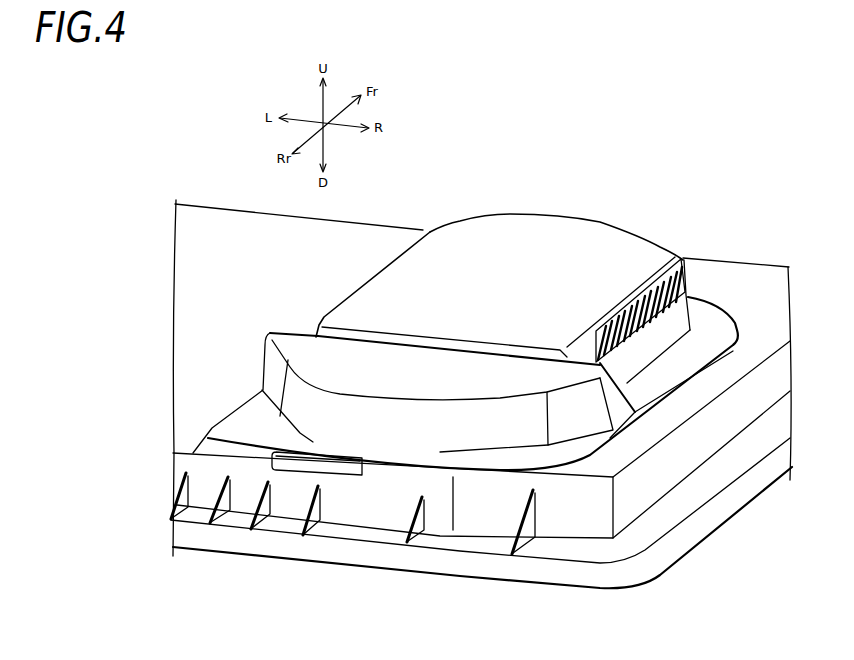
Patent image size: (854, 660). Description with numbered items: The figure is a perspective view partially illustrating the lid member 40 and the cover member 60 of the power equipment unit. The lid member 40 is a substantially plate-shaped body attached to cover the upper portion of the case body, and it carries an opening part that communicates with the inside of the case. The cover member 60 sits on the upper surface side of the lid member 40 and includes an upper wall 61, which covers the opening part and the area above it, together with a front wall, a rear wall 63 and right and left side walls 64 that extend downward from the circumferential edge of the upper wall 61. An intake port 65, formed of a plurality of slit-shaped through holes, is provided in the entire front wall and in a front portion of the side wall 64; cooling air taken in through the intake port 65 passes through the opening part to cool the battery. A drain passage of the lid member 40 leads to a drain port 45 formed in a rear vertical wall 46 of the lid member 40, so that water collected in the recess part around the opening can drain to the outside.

The lid member 40 is at (731, 236).
The drain port 45 is at (349, 463).
The rear vertical wall 46 is at (383, 497).
The cover member 60 is at (511, 262).
The upper wall 61 is at (549, 253).
The rear wall 63 is at (405, 422).
The side wall 64 is at (648, 344).
The intake port 65 is at (689, 278).